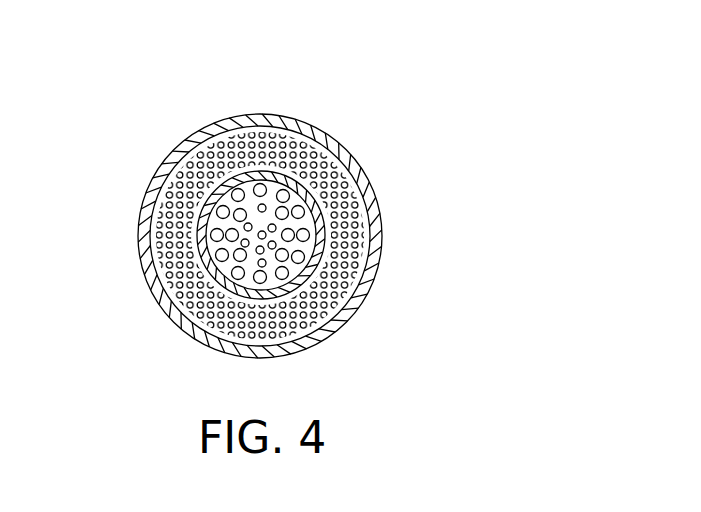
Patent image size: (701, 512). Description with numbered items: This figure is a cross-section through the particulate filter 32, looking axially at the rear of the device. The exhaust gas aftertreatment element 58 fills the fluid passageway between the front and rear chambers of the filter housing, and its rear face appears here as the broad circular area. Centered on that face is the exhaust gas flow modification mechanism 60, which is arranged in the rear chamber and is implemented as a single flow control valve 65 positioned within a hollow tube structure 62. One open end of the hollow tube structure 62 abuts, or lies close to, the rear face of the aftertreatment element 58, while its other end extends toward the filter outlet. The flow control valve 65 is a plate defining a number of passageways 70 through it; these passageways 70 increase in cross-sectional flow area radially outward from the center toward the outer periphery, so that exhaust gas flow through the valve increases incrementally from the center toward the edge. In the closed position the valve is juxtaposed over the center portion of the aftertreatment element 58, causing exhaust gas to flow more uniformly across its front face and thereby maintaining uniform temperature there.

The particulate filter 32 is at (430, 116).
The exhaust gas aftertreatment element 58 is at (310, 143).
The exhaust gas flow modification mechanism 60 is at (214, 247).
The hollow tube structure 62 is at (196, 233).
The flow control valve 65 is at (249, 187).
The passageways 70 is at (283, 257).